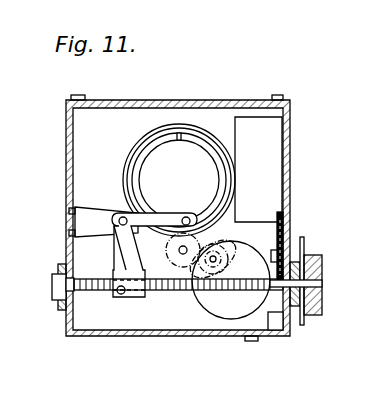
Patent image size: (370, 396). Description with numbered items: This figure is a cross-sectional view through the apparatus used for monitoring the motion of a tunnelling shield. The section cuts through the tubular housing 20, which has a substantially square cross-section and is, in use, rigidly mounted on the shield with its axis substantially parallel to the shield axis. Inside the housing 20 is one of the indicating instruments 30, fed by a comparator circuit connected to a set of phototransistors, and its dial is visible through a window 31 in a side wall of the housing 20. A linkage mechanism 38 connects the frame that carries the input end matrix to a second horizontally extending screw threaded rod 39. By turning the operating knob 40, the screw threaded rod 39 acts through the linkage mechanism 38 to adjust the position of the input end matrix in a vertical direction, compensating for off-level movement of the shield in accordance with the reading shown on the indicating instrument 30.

The tubular housing 20 is at (67, 156).
The indicating instrument 30 is at (272, 135).
The window 31 is at (287, 236).
The linkage mechanism 38 is at (120, 240).
The second horizontally extending screw threaded rod 39 is at (181, 293).
The operating knob 40 is at (318, 320).